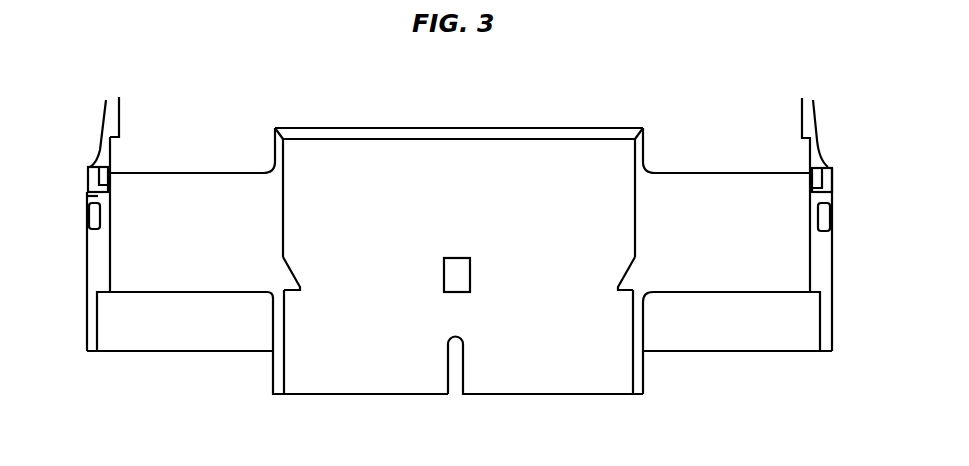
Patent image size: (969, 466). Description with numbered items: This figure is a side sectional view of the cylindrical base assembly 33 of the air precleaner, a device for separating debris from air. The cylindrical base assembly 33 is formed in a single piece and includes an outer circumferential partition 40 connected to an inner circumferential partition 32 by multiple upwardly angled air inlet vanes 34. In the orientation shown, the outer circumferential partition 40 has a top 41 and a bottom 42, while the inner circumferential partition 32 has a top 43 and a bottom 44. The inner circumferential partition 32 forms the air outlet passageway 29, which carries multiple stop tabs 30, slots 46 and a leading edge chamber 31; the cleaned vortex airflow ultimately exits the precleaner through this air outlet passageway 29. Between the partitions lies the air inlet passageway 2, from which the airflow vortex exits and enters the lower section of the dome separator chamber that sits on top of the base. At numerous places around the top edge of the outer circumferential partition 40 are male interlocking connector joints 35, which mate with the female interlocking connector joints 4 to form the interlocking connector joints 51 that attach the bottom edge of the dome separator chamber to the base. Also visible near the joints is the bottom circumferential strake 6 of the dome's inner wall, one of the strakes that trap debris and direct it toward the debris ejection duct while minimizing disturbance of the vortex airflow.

The air inlet passageway 2 is at (204, 323).
The female interlocking connector joints 4 is at (86, 175).
The circumferential strake 6 is at (814, 133).
The air outlet passageway 29 is at (459, 214).
The stop tabs 30 is at (440, 294).
The leading edge chamber 31 is at (644, 126).
The inner circumferential partition 32 is at (285, 356).
The cylindrical base assembly 33 is at (94, 270).
The air inlet vanes 34 is at (190, 226).
The male interlocking connector joints 35 is at (808, 195).
The outer circumferential partition 40 is at (85, 316).
The top of outer circumferential partition 41 is at (110, 167).
The bottom of outer circumferential partition 42 is at (90, 356).
The top of inner circumferential partition 43 is at (271, 126).
The bottom of inner circumferential partition 44 is at (276, 399).
The slots 46 is at (455, 383).
The interlocking connector joints 51 is at (834, 199).